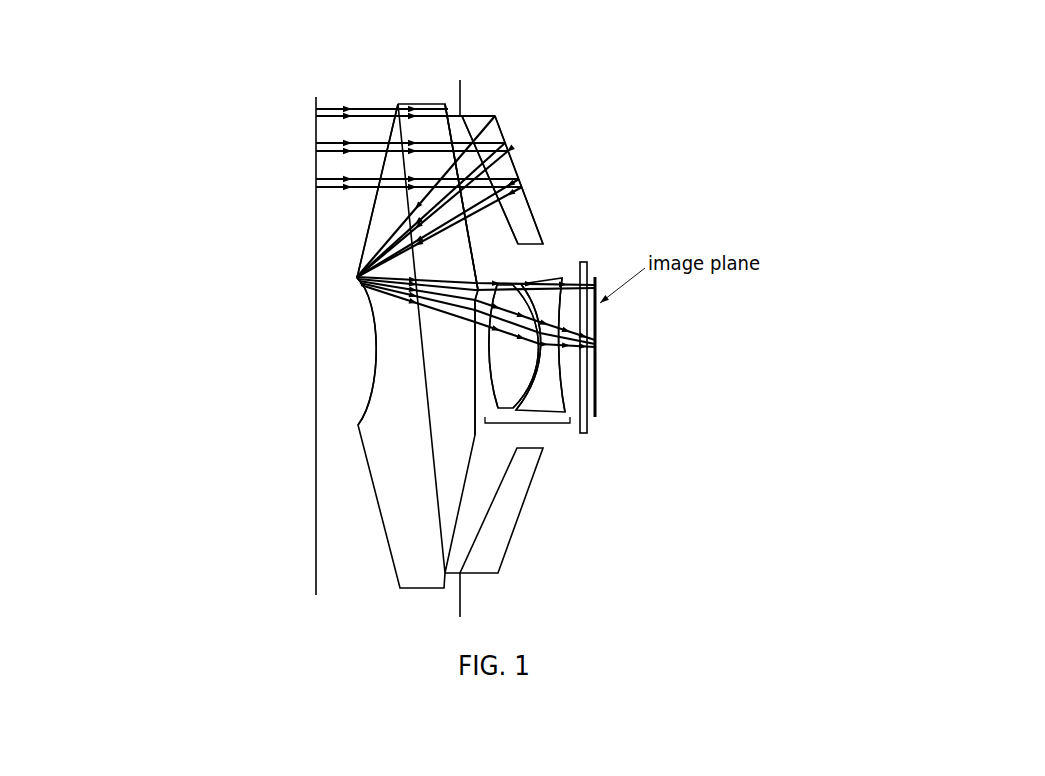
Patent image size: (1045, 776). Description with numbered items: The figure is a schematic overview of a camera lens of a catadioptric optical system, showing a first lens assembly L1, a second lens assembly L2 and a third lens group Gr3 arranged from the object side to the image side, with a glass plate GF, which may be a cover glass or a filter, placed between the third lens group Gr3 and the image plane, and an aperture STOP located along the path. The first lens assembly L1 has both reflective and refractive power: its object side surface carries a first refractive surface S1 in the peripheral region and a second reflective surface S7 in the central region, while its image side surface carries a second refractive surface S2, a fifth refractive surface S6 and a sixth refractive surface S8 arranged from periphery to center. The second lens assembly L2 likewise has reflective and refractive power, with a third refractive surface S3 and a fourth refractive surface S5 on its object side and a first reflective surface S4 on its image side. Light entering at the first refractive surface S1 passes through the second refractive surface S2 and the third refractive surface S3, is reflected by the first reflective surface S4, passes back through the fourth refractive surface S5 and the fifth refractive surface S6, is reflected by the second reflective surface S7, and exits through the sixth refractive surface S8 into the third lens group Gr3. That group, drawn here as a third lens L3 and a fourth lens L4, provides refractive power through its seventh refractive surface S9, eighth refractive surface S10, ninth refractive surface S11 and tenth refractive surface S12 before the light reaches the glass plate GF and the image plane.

The aperture STOP is at (456, 78).
The first lens assembly L1 is at (417, 346).
The second lens assembly L2 is at (504, 510).
The third lens L3 is at (514, 332).
The fourth lens L4 is at (540, 334).
The glass plate GF is at (586, 262).
The third lens group Gr3 is at (554, 430).
The first refractive surface S1 is at (380, 132).
The second refractive surface S2 is at (443, 140).
The third refractive surface S3 is at (490, 116).
The first reflective surface S4 is at (513, 143).
The fourth refractive surface S5 is at (521, 223).
The fifth refractive surface S6 is at (449, 165).
The second reflective surface S7 is at (356, 383).
The sixth refractive surface S8 is at (468, 363).
The seventh refractive surface S9 is at (499, 383).
The eighth refractive surface S10 is at (524, 367).
The ninth refractive surface S11 is at (546, 352).
The tenth refractive surface S12 is at (570, 313).